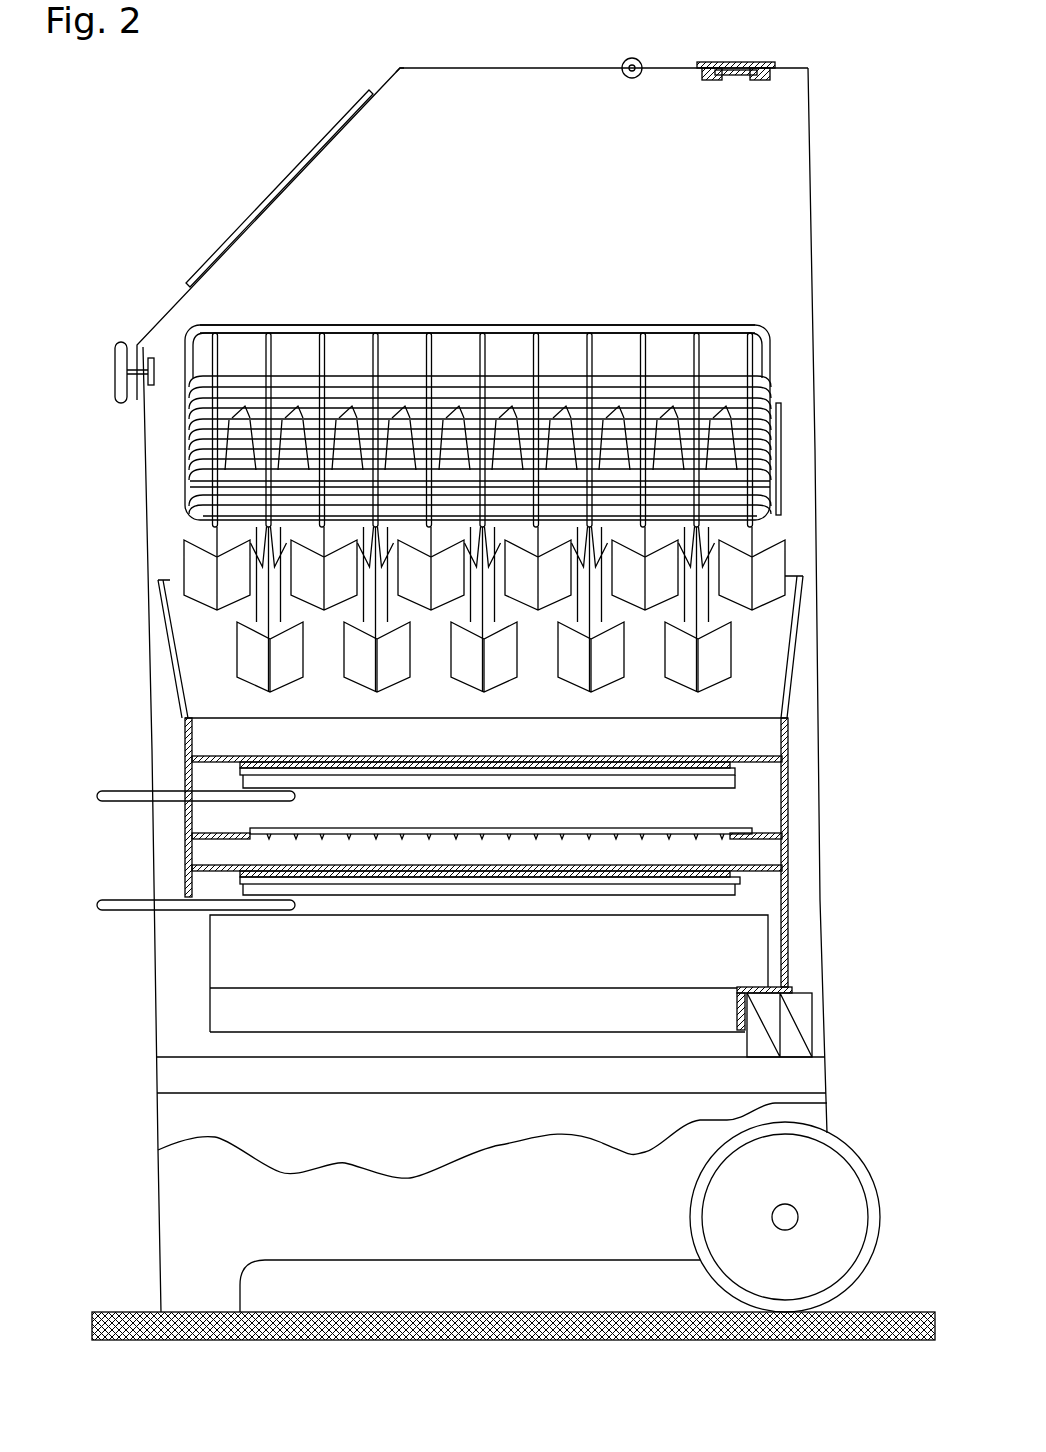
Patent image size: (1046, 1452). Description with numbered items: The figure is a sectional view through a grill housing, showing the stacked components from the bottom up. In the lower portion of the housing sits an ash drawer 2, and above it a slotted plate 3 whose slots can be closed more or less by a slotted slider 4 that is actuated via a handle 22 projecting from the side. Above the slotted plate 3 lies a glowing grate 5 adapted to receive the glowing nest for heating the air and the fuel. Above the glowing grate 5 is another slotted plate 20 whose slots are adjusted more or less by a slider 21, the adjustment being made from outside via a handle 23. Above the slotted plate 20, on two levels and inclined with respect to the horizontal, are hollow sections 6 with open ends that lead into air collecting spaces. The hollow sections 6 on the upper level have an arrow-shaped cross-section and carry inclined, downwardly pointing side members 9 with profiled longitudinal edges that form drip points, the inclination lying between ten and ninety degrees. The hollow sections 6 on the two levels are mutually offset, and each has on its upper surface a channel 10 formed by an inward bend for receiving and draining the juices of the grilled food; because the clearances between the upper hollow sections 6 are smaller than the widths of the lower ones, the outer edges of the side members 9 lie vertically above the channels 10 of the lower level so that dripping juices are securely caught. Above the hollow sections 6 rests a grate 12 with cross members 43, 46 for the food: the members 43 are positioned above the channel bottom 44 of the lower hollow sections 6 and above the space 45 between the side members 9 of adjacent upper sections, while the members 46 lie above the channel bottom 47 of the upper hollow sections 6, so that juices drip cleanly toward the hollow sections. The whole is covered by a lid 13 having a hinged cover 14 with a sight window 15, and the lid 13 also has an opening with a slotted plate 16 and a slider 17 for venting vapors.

The ash drawer 2 is at (230, 968).
The slotted plate 3 is at (753, 868).
The slotted slider 4 is at (688, 885).
The glowing grate 5 is at (703, 823).
The hollow sections 6 is at (192, 617).
The side members 9 is at (250, 543).
The channel 10 is at (273, 637).
The grate 12 is at (190, 395).
The lid 13 is at (497, 180).
The hinged cover 14 is at (400, 68).
The sight window 15 is at (338, 128).
The slotted plate 16 is at (712, 62).
The slider 17 is at (740, 62).
The slotted plate 20 is at (687, 755).
The slider 21 is at (720, 777).
The handle 22 is at (177, 942).
The handle 23 is at (177, 834).
The cross members 43 is at (693, 342).
The channel bottom 44 is at (700, 625).
The space 45 is at (707, 543).
The cross members 46 is at (643, 337).
The channel bottom 47 is at (752, 535).